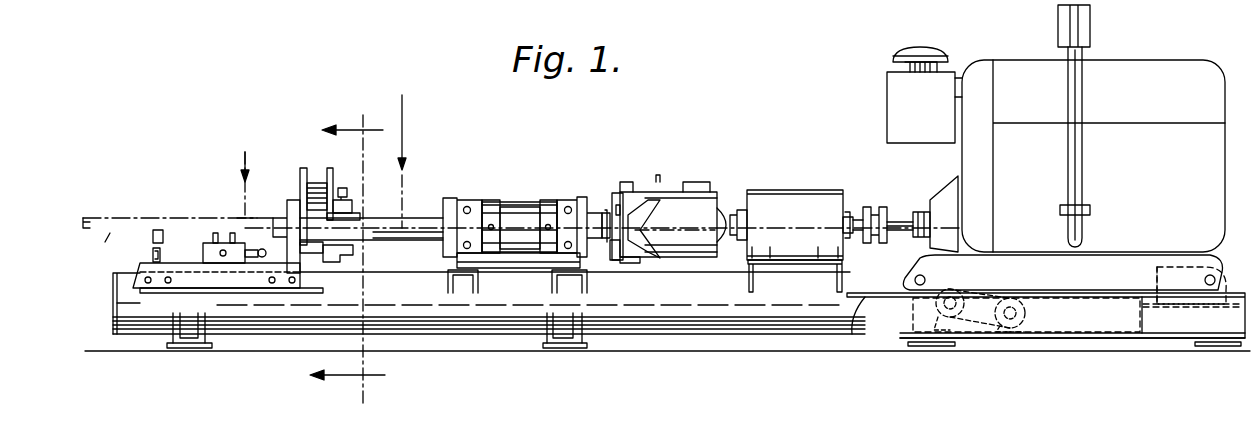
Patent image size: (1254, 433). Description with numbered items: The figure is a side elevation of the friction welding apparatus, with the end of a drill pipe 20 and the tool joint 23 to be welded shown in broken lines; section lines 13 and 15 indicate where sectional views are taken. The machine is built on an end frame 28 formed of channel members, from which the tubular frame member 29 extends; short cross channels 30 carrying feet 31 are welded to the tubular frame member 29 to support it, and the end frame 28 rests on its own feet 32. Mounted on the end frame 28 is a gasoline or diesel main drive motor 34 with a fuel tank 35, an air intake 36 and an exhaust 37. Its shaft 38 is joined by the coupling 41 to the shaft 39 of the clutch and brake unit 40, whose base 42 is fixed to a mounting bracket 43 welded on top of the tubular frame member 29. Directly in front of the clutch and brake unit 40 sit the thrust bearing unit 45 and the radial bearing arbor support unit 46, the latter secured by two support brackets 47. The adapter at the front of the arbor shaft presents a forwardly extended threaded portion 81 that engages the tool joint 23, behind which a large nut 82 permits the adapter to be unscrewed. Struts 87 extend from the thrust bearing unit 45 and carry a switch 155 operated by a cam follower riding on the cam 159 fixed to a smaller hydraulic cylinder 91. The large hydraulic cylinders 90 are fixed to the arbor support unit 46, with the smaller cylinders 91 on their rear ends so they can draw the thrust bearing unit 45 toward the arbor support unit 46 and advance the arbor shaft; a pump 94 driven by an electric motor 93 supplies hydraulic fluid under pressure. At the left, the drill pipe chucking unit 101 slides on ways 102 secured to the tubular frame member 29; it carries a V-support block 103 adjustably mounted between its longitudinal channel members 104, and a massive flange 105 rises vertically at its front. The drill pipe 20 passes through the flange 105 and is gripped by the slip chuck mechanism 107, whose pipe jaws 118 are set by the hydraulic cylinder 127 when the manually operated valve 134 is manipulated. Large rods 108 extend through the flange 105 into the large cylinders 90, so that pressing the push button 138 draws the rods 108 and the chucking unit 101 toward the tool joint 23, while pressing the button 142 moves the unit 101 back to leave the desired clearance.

The section line 13 is at (347, 253).
The section line 15 is at (323, 147).
The drill pipe 20 is at (105, 242).
The tool joint 23 is at (405, 213).
The end frame 28 is at (1117, 327).
The tubular frame member 29 is at (648, 323).
The cross channels 30 is at (185, 348).
The feet 31 is at (196, 348).
The feet 32 is at (930, 346).
The main drive motor 34 is at (1185, 190).
The fuel tank 35 is at (1157, 268).
The air intake 36 is at (893, 82).
The exhaust 37 is at (1077, 97).
The shaft 38 is at (907, 220).
The shaft 39 is at (852, 217).
The clutch and brake unit 40 is at (788, 193).
The coupling 41 is at (875, 208).
The base 42 is at (798, 262).
The mounting bracket 43 is at (767, 273).
The thrust bearing unit 45 is at (692, 200).
The radial bearing arbor support unit 46 is at (515, 200).
The support brackets 47 is at (447, 277).
The threaded portion 81 is at (432, 204).
The large nut 82 is at (450, 198).
The struts 87 is at (638, 253).
The large hydraulic cylinders 90 is at (523, 217).
The smaller hydraulic cylinders 91 is at (577, 222).
The electric motor 93 is at (1027, 308).
The pump 94 is at (945, 293).
The drill pipe chucking unit 101 is at (170, 288).
The ways 102 is at (170, 303).
The V-support block 103 is at (150, 233).
The longitudinal channel members 104 is at (173, 237).
The flange 105 is at (273, 200).
The slip chuck mechanism 107 is at (342, 182).
The large rods 108 is at (390, 237).
The pipe jaws 118 is at (347, 217).
The hydraulic cylinder 127 is at (313, 183).
The manually operated valve 134 is at (230, 237).
The push button 138 is at (323, 283).
The button 142 is at (327, 257).
The switch 155 is at (623, 210).
The cam 159 is at (602, 213).